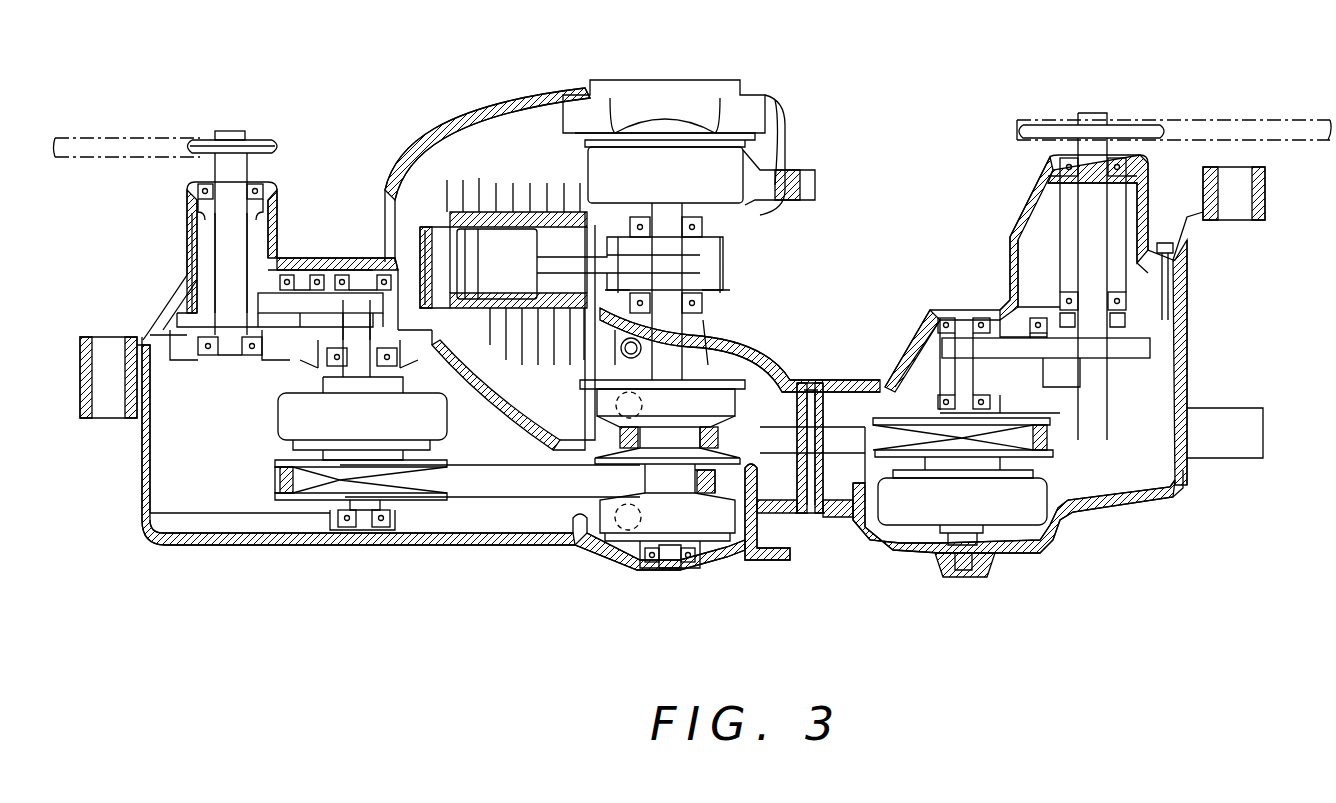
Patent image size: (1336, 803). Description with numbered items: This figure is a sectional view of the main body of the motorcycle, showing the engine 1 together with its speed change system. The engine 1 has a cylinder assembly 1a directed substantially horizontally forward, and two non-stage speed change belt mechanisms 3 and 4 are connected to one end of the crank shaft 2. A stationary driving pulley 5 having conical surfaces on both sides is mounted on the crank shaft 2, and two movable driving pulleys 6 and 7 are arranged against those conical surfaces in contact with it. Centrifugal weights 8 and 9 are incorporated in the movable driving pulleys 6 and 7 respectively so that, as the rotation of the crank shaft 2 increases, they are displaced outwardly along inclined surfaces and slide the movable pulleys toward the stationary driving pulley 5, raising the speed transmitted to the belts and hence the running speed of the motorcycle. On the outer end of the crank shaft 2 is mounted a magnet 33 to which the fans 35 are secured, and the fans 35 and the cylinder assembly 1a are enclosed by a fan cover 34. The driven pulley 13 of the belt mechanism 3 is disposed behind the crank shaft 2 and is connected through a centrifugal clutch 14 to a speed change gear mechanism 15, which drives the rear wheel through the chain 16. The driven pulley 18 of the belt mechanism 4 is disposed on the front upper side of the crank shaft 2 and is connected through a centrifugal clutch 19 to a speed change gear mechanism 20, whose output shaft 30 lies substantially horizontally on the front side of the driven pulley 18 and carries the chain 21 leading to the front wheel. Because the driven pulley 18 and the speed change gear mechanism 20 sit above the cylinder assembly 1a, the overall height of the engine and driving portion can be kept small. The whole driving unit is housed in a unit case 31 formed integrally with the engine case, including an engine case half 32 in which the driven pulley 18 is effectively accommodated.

The engine 1 is at (560, 194).
The cylinder assembly 1a is at (478, 240).
The crank shaft 2 is at (672, 340).
The non-stage speed change belt mechanism 3 is at (778, 437).
The non-stage speed change belt mechanism 4 is at (515, 485).
The stationary driving pulley 5 is at (705, 500).
The movable driving pulley 6 is at (735, 395).
The movable driving pulley 7 is at (655, 515).
The centrifugal weight 8 is at (627, 410).
The centrifugal weight 9 is at (618, 530).
The driven pulley 13 is at (1005, 422).
The centrifugal clutch 14 is at (910, 505).
The speed change gear mechanism 15 is at (1000, 347).
The chain 16 is at (1205, 125).
The driven pulley 18 is at (322, 475).
The centrifugal clutch 19 is at (290, 420).
The speed change gear mechanism 20 is at (298, 305).
The chain 21 is at (163, 140).
The output shaft 30 is at (228, 247).
The unit case 31 is at (913, 367).
The engine case half 32 is at (760, 375).
The magnet 33 is at (720, 170).
The fan cover 34 is at (545, 95).
The fans 35 is at (595, 110).